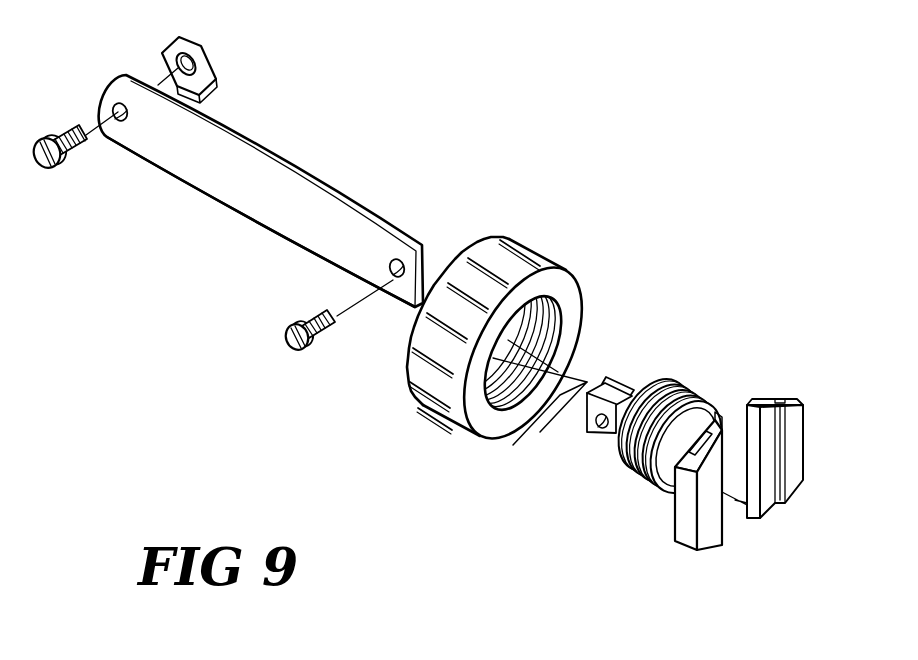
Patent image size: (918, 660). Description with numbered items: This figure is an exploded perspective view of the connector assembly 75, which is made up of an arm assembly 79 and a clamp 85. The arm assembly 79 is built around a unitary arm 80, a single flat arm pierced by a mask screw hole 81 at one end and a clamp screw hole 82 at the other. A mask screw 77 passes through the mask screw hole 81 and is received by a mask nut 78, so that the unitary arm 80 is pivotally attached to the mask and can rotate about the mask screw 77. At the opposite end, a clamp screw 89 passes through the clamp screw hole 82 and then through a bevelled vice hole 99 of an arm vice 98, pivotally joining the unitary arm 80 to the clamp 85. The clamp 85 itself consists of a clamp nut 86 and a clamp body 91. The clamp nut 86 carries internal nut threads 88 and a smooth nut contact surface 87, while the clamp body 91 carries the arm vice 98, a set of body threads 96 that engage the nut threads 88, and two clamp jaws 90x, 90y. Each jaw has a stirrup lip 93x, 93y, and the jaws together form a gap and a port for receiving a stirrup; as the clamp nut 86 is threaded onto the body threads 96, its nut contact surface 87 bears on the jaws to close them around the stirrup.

The connector assembly 75 is at (515, 187).
The mask screw 77 is at (72, 158).
The mask nut 78 is at (215, 52).
The arm assembly 79 is at (323, 165).
The unitary arm 80 is at (273, 197).
The mask screw hole 81 is at (120, 107).
The clamp screw hole 82 is at (395, 260).
The clamp 85 is at (637, 320).
The clamp nut 86 is at (547, 263).
The nut contact surface 87 is at (550, 343).
The nut threads 88 is at (533, 328).
The clamp screw 89 is at (305, 353).
The clamp jaw 90x is at (765, 402).
The clamp jaw 90y is at (687, 537).
The clamp body 91 is at (712, 402).
The stirrup lip 93x is at (793, 483).
The stirrup lip 93y is at (708, 537).
The body threads 96 is at (678, 380).
The arm vice 98 is at (613, 382).
The bevelled vice hole 99 is at (605, 433).